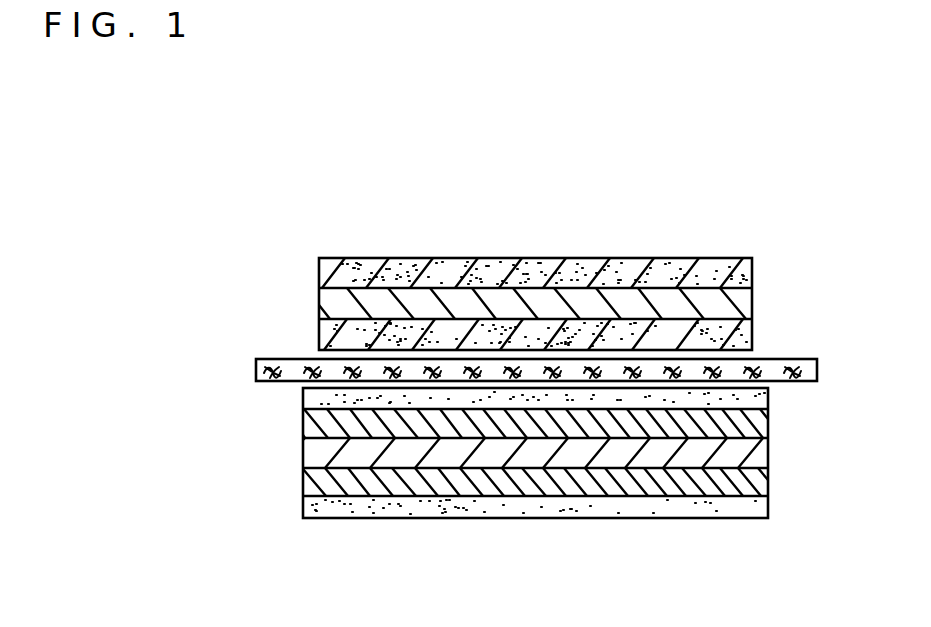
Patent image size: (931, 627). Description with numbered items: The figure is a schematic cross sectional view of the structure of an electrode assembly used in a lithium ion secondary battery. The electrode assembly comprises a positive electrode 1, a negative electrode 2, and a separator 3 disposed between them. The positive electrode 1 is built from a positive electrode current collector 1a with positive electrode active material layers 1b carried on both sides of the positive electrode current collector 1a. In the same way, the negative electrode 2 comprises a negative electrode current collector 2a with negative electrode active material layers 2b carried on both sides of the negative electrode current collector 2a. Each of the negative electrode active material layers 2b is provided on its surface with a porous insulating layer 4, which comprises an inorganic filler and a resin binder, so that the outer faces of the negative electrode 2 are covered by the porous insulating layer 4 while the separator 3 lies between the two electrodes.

The positive electrode 1 is at (592, 278).
The positive electrode current collector 1a is at (740, 300).
The positive electrode active material layers 1b is at (752, 258).
The negative electrode 2 is at (595, 478).
The negative electrode current collector 2a is at (843, 428).
The negative electrode active material layers 2b is at (750, 427).
The separator 3 is at (817, 367).
The porous insulating layer 4 is at (752, 398).